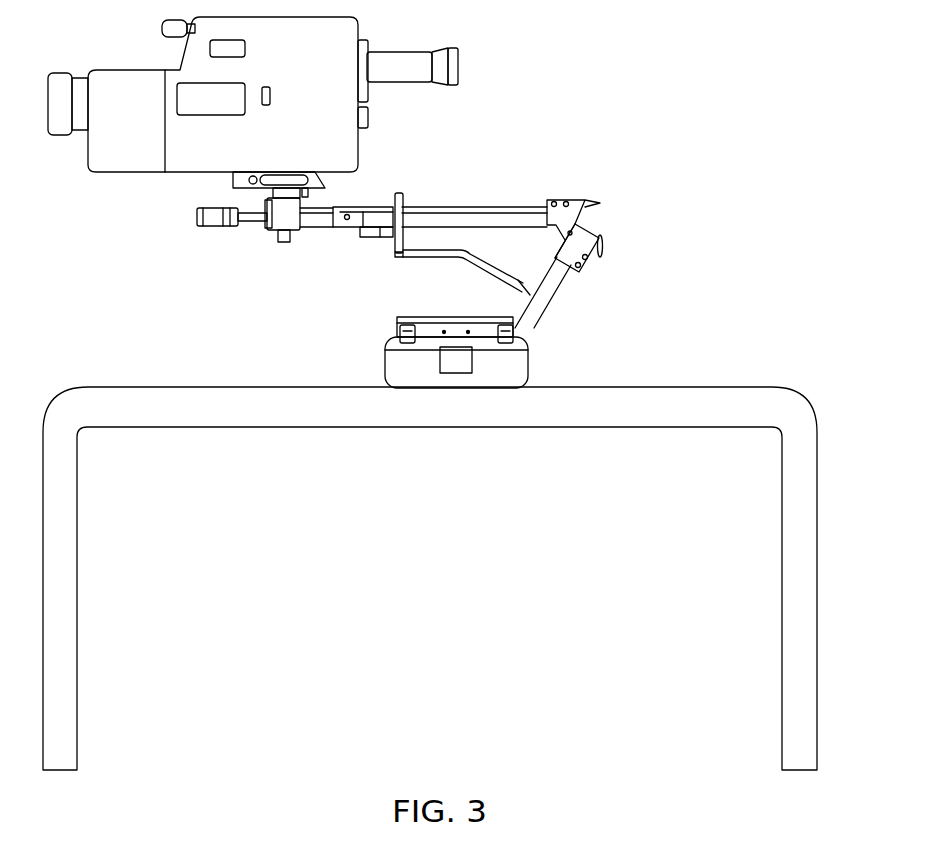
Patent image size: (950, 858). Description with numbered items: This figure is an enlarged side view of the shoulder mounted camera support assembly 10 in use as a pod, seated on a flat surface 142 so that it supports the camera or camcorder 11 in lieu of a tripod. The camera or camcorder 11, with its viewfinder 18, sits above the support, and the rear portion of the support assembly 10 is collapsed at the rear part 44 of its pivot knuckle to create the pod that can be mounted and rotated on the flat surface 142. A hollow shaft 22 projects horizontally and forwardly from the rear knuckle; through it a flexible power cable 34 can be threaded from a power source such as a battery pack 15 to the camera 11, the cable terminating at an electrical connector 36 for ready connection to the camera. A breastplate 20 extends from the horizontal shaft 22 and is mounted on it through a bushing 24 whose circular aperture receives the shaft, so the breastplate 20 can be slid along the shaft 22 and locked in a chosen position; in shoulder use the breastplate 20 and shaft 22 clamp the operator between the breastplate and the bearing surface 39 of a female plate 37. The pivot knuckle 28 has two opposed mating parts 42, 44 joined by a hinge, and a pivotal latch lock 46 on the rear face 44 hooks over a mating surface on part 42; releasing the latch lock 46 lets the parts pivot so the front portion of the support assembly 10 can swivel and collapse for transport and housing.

The shoulder mounted camera support assembly 10 is at (546, 150).
The camera or camcorder 11 is at (88, 161).
The battery pack 15 is at (393, 366).
The viewfinder 18 is at (418, 50).
The breastplate 20 is at (416, 268).
The hollow shaft 22 is at (490, 207).
The bushing 24 is at (407, 195).
The pivot knuckle 28 is at (374, 201).
The power cable 34 is at (583, 222).
The electrical connector 36 is at (197, 217).
The female plate 37 is at (388, 343).
The bearing surface 39 is at (431, 317).
The first part of pivot knuckle 42 is at (575, 200).
The rear part of pivot knuckle 44 is at (586, 270).
The latch lock 46 is at (604, 249).
The flat surface 142 is at (535, 427).